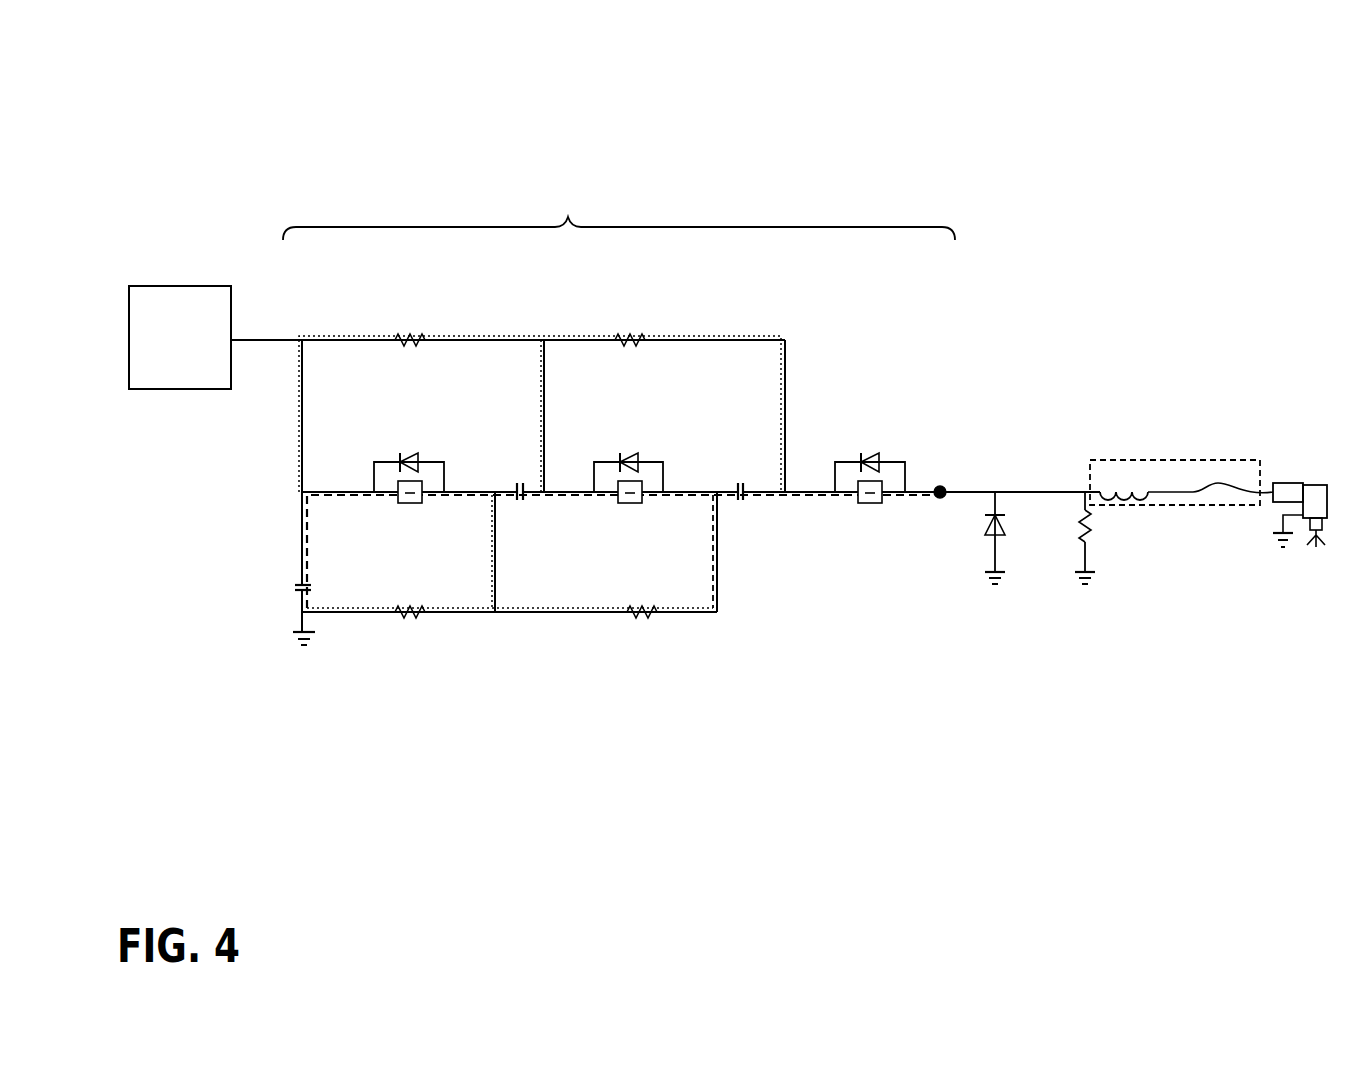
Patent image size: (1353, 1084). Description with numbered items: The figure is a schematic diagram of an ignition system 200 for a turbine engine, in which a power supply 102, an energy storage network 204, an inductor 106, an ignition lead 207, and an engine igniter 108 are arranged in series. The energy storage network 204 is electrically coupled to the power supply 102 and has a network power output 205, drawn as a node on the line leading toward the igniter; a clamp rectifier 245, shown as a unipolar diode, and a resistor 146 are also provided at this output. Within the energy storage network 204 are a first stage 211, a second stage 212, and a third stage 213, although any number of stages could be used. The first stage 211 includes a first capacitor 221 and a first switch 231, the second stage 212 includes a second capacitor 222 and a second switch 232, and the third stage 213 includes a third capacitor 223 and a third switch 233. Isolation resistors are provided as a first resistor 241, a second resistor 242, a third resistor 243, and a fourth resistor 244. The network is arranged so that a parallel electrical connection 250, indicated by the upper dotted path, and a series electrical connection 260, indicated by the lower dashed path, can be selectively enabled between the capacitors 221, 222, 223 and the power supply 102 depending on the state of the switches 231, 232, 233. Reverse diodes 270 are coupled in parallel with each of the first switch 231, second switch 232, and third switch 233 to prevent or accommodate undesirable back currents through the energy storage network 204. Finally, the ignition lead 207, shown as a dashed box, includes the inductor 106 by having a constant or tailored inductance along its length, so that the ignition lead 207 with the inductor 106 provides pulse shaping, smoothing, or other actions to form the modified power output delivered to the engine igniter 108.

The ignition system 200 is at (230, 92).
The power supply 102 is at (180, 337).
The energy storage network 204 is at (619, 212).
The first stage 211 is at (295, 538).
The second stage 212 is at (515, 483).
The third stage 213 is at (733, 480).
The first capacitor 221 is at (300, 582).
The second capacitor 222 is at (523, 498).
The third capacitor 223 is at (744, 496).
The first switch 231 is at (408, 505).
The second switch 232 is at (628, 505).
The third switch 233 is at (870, 505).
The first resistor 241 is at (411, 337).
The second resistor 242 is at (631, 337).
The third resistor 243 is at (408, 614).
The fourth resistor 244 is at (638, 614).
The clamp rectifier 245 is at (990, 537).
The parallel electrical connection 250 is at (790, 360).
The series electrical connection 260 is at (686, 503).
The reverse diode 270 is at (407, 455).
The network power output 205 is at (942, 486).
The resistor 146 is at (1082, 540).
The ignition lead 207 is at (1223, 458).
The inductor 106 is at (1132, 499).
The engine igniter 108 is at (1317, 493).